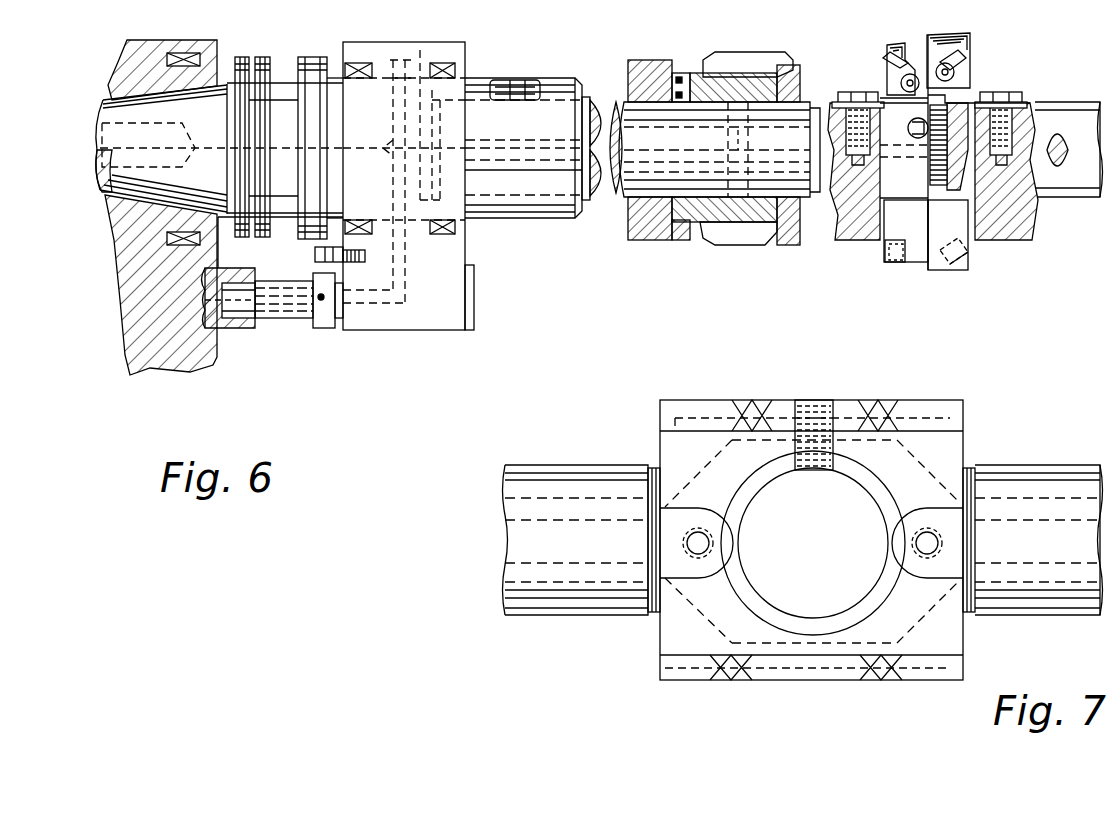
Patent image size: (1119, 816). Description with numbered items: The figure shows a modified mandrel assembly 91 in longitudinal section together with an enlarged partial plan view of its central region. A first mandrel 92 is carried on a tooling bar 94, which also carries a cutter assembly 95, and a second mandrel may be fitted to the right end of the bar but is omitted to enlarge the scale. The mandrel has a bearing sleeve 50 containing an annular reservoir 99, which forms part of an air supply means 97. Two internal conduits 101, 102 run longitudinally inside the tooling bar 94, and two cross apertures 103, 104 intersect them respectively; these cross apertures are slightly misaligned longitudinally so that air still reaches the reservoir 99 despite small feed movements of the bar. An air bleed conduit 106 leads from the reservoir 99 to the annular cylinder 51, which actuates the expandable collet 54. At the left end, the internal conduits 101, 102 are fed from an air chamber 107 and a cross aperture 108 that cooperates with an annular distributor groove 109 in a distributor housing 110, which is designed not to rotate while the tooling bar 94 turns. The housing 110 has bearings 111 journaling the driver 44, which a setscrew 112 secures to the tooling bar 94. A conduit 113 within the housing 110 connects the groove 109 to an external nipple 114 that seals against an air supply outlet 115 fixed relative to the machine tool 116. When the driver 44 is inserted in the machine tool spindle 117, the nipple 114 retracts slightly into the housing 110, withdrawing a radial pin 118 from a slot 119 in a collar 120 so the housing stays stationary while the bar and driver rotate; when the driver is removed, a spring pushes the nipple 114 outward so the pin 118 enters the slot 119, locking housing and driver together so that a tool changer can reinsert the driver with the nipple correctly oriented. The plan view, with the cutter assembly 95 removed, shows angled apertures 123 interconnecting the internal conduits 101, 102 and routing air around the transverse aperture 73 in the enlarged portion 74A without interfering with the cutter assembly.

In FIG. 6, the driver 44 is at (225, 84).
In FIG. 6, the bearing sleeve 50 is at (775, 240).
In FIG. 6, the annular cylinder 51 is at (703, 73).
In FIG. 6, the expandable collet 54 is at (775, 58).
In FIG. 6, the transverse aperture 73 is at (898, 248).
In FIG. 7, the transverse aperture 73 is at (848, 478).
In FIG. 6, the enlarged portion 74A is at (842, 240).
In FIG. 7, the enlarged portion 74A is at (950, 405).
In FIG. 6, the mandrel assembly 91 is at (858, 40).
In FIG. 6, the first mandrel 92 is at (652, 60).
In FIG. 6, the tooling bar 94 is at (594, 196).
In FIG. 7, the tooling bar 94 is at (532, 465).
In FIG. 6, the cutter assembly 95 is at (887, 80).
In FIG. 7, the cutter assembly 95 is at (872, 508).
In FIG. 6, the air supply means 97 is at (320, 328).
In FIG. 6, the annular reservoir 99 is at (738, 102).
In FIG. 7, the internal conduit 101 is at (508, 500).
In FIG. 6, the internal conduit 102 is at (490, 155).
In FIG. 7, the internal conduit 102 is at (508, 565).
In FIG. 6, the cross aperture 103 is at (725, 172).
In FIG. 6, the cross aperture 104 is at (750, 128).
In FIG. 6, the air bleed conduit 106 is at (680, 73).
In FIG. 6, the air chamber 107 is at (440, 65).
In FIG. 6, the cross aperture 108 is at (420, 50).
In FIG. 6, the annular distributor groove 109 is at (395, 60).
In FIG. 6, the distributor housing 110 is at (362, 42).
In FIG. 6, the bearings 111 is at (452, 66).
In FIG. 6, the setscrew 112 is at (500, 78).
In FIG. 6, the conduit 113 is at (405, 303).
In FIG. 6, the external nipple 114 is at (280, 318).
In FIG. 6, the air supply outlet 115 is at (225, 328).
In FIG. 6, the machine tool 116 is at (155, 360).
In FIG. 6, the machine tool spindle 117 is at (140, 78).
In FIG. 6, the radial pin 118 is at (335, 240).
In FIG. 6, the slot 119 is at (315, 245).
In FIG. 6, the collar 120 is at (318, 57).
In FIG. 7, the angled apertures 123 is at (712, 665).